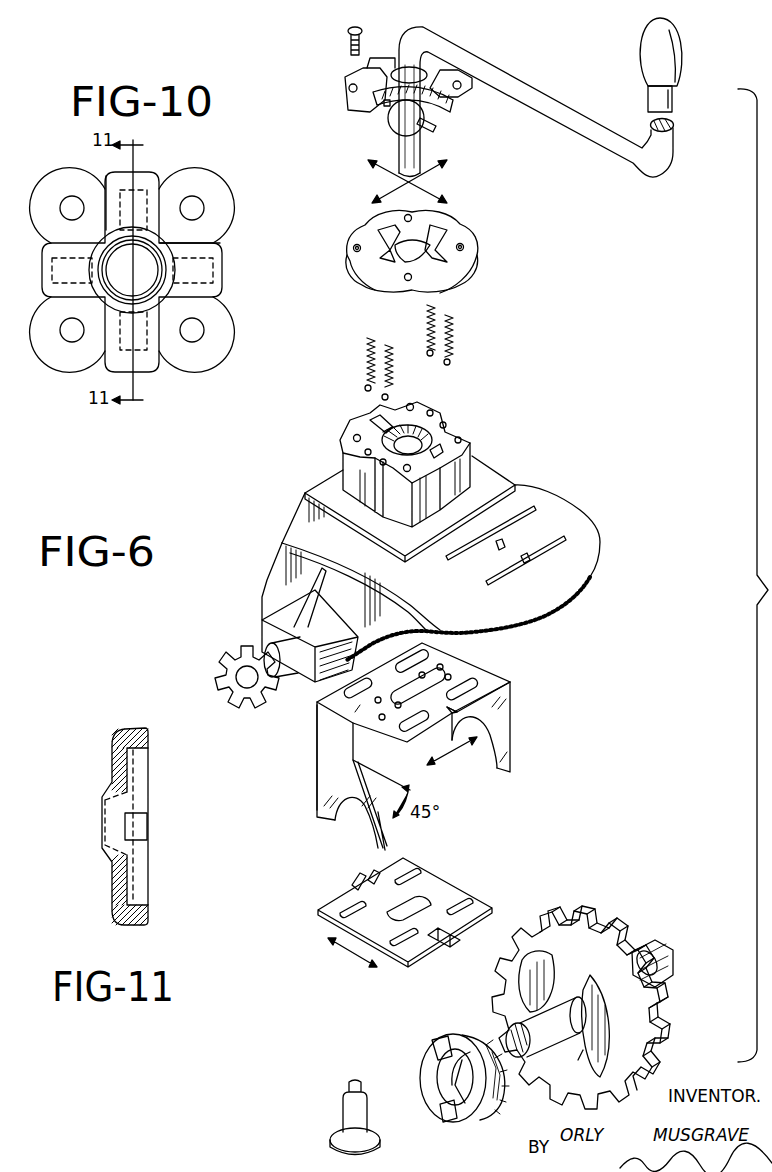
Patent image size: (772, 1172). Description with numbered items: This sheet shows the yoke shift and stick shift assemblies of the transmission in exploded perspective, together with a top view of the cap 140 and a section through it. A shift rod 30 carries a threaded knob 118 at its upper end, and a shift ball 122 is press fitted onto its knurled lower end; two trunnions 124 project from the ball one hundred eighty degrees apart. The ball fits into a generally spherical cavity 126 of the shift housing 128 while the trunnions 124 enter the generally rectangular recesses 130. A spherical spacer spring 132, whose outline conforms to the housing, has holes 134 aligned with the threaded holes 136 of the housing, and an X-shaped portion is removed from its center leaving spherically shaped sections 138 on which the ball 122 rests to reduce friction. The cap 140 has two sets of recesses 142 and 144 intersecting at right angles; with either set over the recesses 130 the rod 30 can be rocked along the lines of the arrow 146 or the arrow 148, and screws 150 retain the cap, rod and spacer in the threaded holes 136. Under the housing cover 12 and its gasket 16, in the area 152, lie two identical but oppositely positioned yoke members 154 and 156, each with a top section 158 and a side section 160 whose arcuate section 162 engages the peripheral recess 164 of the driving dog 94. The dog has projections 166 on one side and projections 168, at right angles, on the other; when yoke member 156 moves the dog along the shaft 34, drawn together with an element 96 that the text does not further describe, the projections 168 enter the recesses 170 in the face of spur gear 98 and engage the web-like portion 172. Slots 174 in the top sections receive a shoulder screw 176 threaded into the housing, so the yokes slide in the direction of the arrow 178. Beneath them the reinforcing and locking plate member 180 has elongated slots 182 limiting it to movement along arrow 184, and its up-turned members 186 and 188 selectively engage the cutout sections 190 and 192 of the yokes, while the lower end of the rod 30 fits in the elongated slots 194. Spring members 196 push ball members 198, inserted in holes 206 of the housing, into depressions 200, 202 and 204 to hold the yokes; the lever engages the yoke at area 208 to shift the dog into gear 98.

In FIG. 6, the cover 12 is at (337, 488).
In FIG. 6, the gasket 16 is at (583, 588).
In FIG. 6, the shift rod 30 is at (574, 116).
In FIG. 6, the shaft 34 is at (665, 963).
In FIG. 6, the driving dog 94 is at (500, 1105).
In FIG. 6, the shaft 96 is at (556, 1053).
In FIG. 6, the spur gear 98 is at (650, 1020).
In FIG. 6, the knob 118 is at (638, 46).
In FIG. 6, the shift ball 122 is at (425, 137).
In FIG. 6, the trunnions 124 is at (388, 107).
In FIG. 6, the spherical cavity 126 is at (432, 435).
In FIG. 6, the shift housing 128 is at (470, 470).
In FIG. 6, the rectangular recesses 130 is at (370, 420).
In FIG. 6, the spherical spacer spring 132 is at (465, 230).
In FIG. 6, the holes 134 is at (462, 249).
In FIG. 6, the threaded holes 136 is at (410, 403).
In FIG. 6, the sections 138 is at (417, 240).
In FIG. 6, the cap 140 is at (345, 99).
In FIG. 10, the recesses 142 is at (202, 262).
In FIG. 6, the recesses 142 is at (368, 108).
In FIG. 10, the recesses 144 is at (133, 207).
In FIG. 11, the recesses 144 is at (110, 755).
In FIG. 6, the recesses 144 is at (368, 68).
In FIG. 6, the arrow 146 is at (380, 171).
In FIG. 6, the arrow 148 is at (438, 172).
In FIG. 6, the screws 150 is at (347, 30).
In FIG. 6, the area 152 is at (522, 627).
In FIG. 6, the yoke member 154 is at (317, 806).
In FIG. 6, the yoke member 156 is at (515, 767).
In FIG. 6, the top section 158 is at (333, 725).
In FIG. 6, the side section 160 is at (317, 776).
In FIG. 6, the arcuate section 162 is at (345, 827).
In FIG. 6, the recess 164 is at (470, 1040).
In FIG. 6, the projections 166 is at (432, 1048).
In FIG. 6, the projections 168 is at (503, 1070).
In FIG. 6, the recesses 170 is at (525, 973).
In FIG. 6, the web-like portion 172 is at (605, 950).
In FIG. 6, the slots 174 is at (420, 657).
In FIG. 6, the shoulder screw 176 is at (380, 1150).
In FIG. 6, the arrow 178 is at (458, 755).
In FIG. 6, the reinforcing and locking plate member 180 is at (427, 957).
In FIG. 6, the elongated slots 182 is at (420, 870).
In FIG. 6, the arrow 184 is at (350, 960).
In FIG. 6, the up-turned member 186 is at (352, 880).
In FIG. 6, the up-turned member 188 is at (448, 945).
In FIG. 6, the cutout section 190 is at (312, 690).
In FIG. 6, the cutout section 192 is at (455, 717).
In FIG. 6, the elongated slots 194 is at (425, 903).
In FIG. 6, the spring member 196 is at (386, 345).
In FIG. 6, the ball members 198 is at (380, 397).
In FIG. 6, the depression 200 is at (452, 677).
In FIG. 6, the depression 202 is at (443, 666).
In FIG. 6, the depression 204 is at (382, 720).
In FIG. 6, the holes 206 is at (433, 412).
In FIG. 6, the area 208 is at (458, 710).